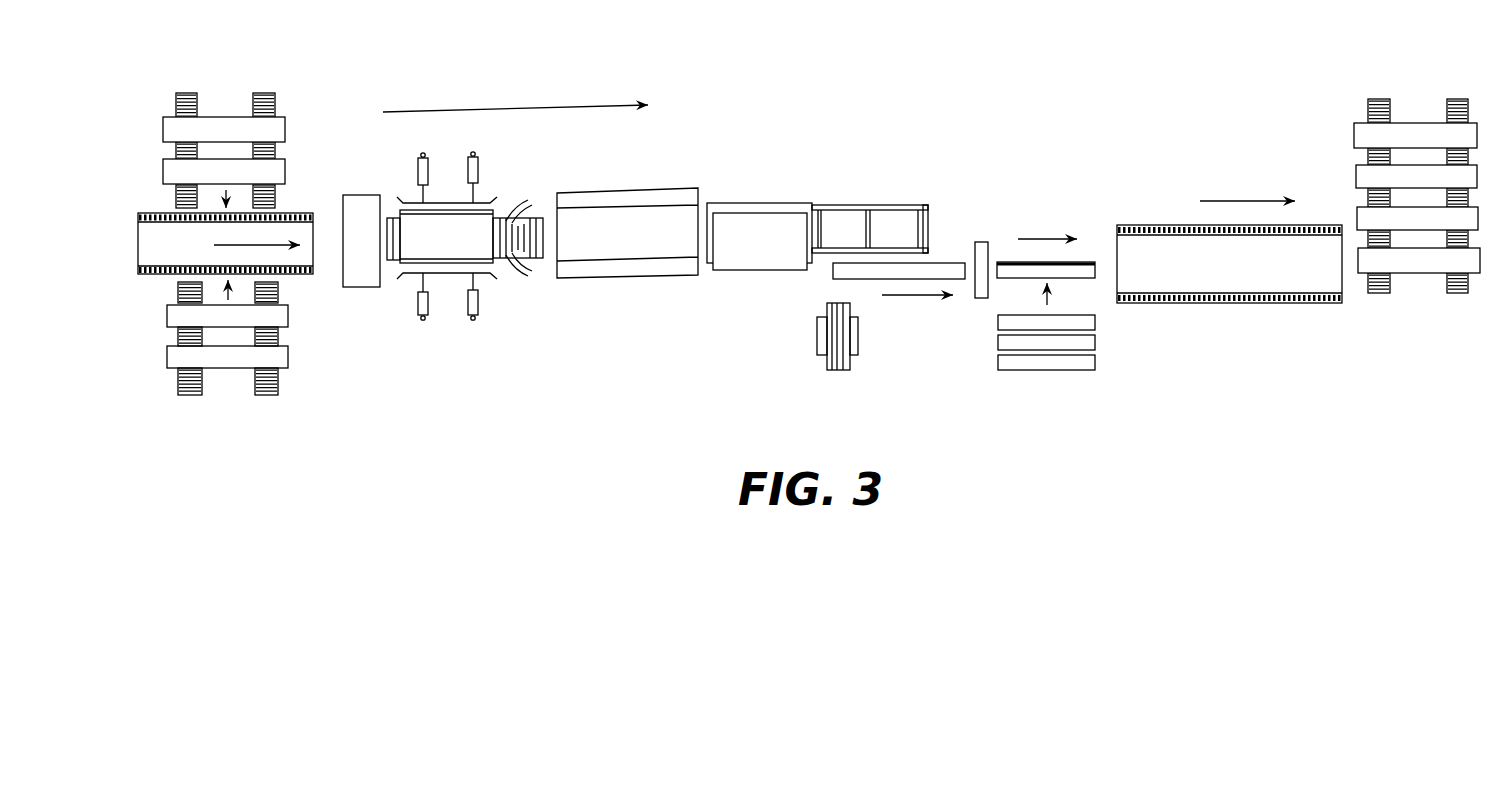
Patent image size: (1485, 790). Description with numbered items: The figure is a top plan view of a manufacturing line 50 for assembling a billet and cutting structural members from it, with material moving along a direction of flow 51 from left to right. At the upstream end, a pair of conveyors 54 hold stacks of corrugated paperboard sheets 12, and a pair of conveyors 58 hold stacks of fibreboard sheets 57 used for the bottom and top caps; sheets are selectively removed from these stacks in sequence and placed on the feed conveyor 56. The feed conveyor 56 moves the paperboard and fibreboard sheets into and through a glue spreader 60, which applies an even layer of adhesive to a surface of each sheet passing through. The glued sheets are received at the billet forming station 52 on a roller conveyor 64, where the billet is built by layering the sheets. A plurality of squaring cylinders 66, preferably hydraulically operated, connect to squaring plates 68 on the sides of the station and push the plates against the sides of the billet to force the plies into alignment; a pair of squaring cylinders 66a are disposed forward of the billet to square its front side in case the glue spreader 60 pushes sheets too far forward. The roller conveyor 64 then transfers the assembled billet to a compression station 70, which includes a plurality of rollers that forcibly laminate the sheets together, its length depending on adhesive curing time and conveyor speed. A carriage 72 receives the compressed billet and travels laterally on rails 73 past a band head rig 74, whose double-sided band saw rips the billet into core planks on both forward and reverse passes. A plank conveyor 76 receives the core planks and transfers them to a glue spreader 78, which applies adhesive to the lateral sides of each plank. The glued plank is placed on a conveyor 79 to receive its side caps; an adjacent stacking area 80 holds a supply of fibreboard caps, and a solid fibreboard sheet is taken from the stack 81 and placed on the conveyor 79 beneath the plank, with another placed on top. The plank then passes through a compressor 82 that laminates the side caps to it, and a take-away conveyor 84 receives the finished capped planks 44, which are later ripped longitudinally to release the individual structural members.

The corrugated paperboard sheets 12 is at (270, 128).
The capped planks 44 is at (1354, 138).
The manufacturing line 50 is at (810, 127).
The direction of flow 51 is at (515, 95).
The billet forming station 52 is at (402, 173).
The pair of conveyors 54 is at (198, 103).
The feed conveyor 56 is at (157, 212).
The fibreboard sheets 57 is at (272, 316).
The pair of conveyors 58 is at (258, 383).
The glue spreader 60 is at (362, 287).
The roller conveyor 64 is at (530, 217).
The squaring cylinders 66 is at (467, 167).
The squaring cylinders 66a is at (530, 200).
The squaring plates 68 is at (447, 203).
The compression station 70 is at (650, 277).
The carriage 72 is at (768, 202).
The rails 73 is at (883, 203).
The band head rig 74 is at (858, 340).
The plank conveyor 76 is at (962, 279).
The glue spreader 78 is at (972, 243).
The conveyor 79 is at (1082, 262).
The stacking area 80 is at (1105, 313).
The stack 81 is at (1050, 343).
The compressor 82 is at (1210, 303).
The take-away conveyor 84 is at (1443, 107).